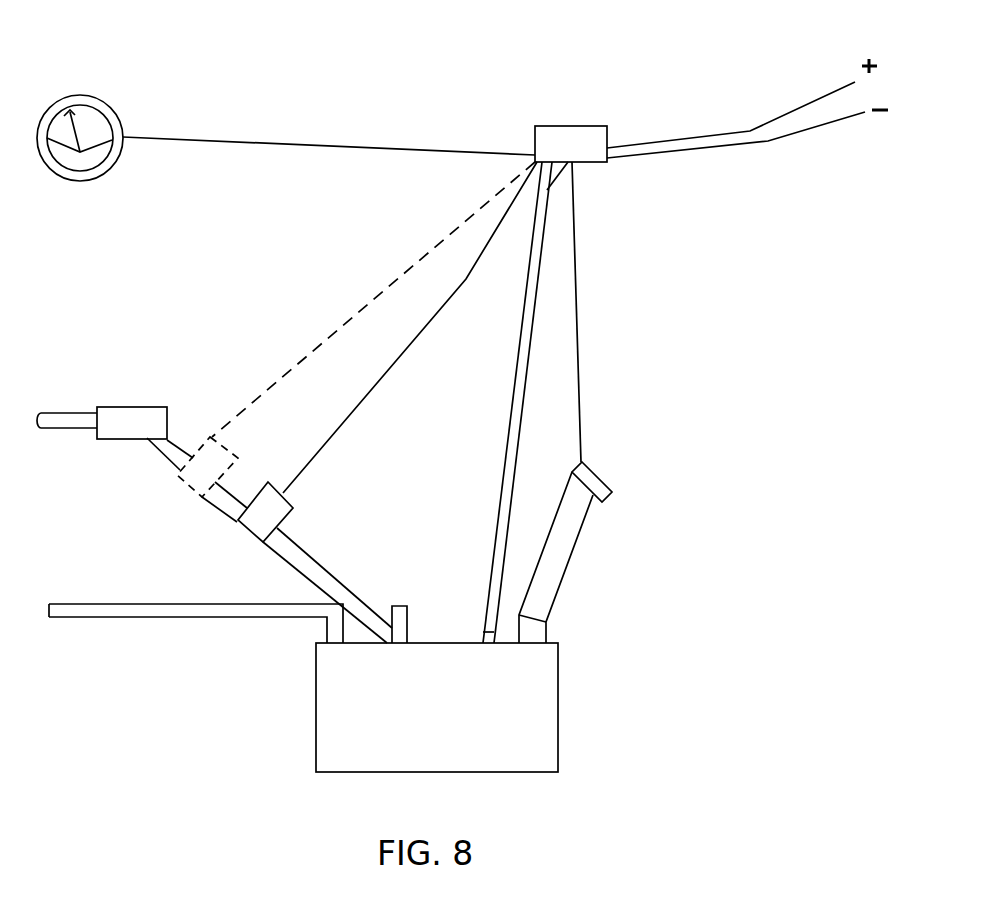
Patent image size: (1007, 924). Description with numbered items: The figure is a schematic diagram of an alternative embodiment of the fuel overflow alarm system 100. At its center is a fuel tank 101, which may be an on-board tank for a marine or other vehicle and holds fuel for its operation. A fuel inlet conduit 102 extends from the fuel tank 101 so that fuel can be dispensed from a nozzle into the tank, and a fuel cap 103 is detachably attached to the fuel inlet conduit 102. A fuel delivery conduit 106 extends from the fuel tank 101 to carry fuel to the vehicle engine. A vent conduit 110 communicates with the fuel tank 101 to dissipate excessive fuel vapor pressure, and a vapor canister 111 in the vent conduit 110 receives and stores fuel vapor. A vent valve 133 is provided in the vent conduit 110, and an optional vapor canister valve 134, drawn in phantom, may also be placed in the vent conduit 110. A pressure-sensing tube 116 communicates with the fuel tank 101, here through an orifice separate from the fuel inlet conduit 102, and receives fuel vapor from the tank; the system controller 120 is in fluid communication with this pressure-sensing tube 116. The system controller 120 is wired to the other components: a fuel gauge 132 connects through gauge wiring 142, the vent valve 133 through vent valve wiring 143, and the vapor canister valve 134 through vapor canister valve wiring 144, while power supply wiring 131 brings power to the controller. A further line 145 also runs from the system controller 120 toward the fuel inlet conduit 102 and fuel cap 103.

The fuel overflow alarm system 100 is at (286, 60).
The fuel gauge 132 is at (116, 102).
The gauge wiring 142 is at (402, 158).
The system controller 120 is at (595, 82).
The power supply wiring 131 is at (750, 135).
The vent valve wiring 143 is at (383, 377).
The vapor canister valve wiring 144 is at (337, 343).
The control line 145 is at (578, 323).
The pressure-sensing tube 116 is at (511, 436).
The fuel cap 103 is at (597, 484).
The fuel inlet conduit 102 is at (562, 547).
The fuel tank 101 is at (548, 706).
The fuel delivery conduit 106 is at (190, 612).
The vent conduit 110 is at (307, 565).
The vent valve 133 is at (277, 510).
The vapor canister valve 134 is at (236, 448).
The vapor canister 111 is at (143, 422).